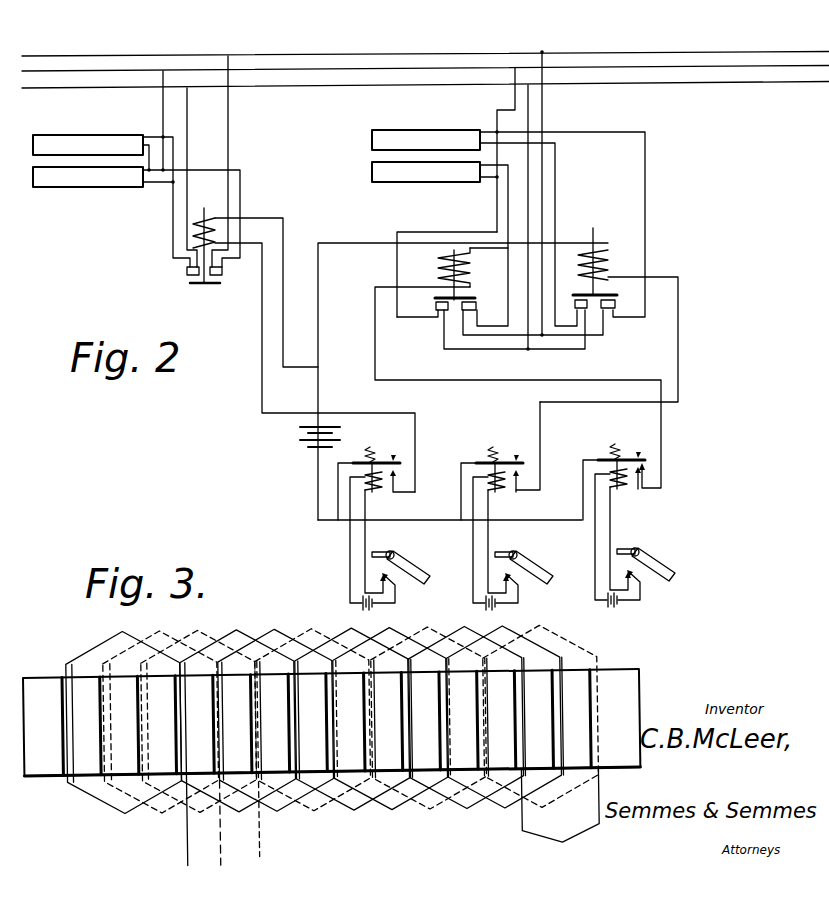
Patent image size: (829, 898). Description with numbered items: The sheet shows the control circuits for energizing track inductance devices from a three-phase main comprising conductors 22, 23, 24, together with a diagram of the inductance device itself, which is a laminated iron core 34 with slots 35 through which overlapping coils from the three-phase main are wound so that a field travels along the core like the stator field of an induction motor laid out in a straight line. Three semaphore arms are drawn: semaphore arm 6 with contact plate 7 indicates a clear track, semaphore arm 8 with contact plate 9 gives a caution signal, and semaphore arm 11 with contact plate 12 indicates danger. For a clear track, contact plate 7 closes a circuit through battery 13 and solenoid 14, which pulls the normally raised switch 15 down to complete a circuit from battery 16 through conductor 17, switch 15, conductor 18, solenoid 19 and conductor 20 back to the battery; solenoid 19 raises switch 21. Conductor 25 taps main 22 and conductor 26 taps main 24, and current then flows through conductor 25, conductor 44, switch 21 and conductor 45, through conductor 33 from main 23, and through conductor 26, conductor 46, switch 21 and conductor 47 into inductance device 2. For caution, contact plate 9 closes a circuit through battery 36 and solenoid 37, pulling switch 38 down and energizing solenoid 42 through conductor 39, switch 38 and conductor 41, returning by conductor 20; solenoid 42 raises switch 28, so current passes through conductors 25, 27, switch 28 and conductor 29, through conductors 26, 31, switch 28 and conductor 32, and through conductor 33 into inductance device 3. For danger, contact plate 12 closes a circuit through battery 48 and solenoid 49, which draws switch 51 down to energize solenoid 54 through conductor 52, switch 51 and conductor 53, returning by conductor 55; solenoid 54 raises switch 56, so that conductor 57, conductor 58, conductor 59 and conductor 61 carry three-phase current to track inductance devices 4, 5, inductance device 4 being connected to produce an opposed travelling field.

In FIG. 2, the track inductance device 2 is at (380, 173).
In FIG. 2, the track inductance device 3 is at (376, 135).
In FIG. 2, the track inductance device 4 is at (46, 134).
In FIG. 2, the track inductance device 5 is at (44, 187).
In FIG. 2, the semaphore arm 6 is at (668, 563).
In FIG. 2, the contact plate 7 is at (628, 536).
In FIG. 2, the semaphore arm 8 is at (537, 559).
In FIG. 2, the contact plate 9 is at (507, 541).
In FIG. 2, the semaphore arm 11 is at (428, 572).
In FIG. 2, the contact plate 12 is at (386, 551).
In FIG. 2, the battery 13 is at (587, 606).
In FIG. 2, the solenoid 14 is at (633, 487).
In FIG. 2, the switch 15 is at (621, 439).
In FIG. 2, the battery 16 is at (298, 445).
In FIG. 2, the conductor 17 is at (574, 490).
In FIG. 2, the conductor 18 is at (671, 467).
In FIG. 2, the solenoid 19 is at (438, 262).
In FIG. 2, the conductor 20 is at (342, 243).
In FIG. 2, the switch 21 is at (474, 296).
In FIG. 2, the conductor of three-phase main 22 is at (370, 54).
In FIG. 2, the conductor of three-phase main 23 is at (412, 68).
In FIG. 2, the conductor of three-phase main 24 is at (447, 83).
In FIG. 2, the conductor 25 is at (545, 97).
In FIG. 2, the conductor 26 is at (545, 115).
In FIG. 2, the conductor 27 is at (603, 337).
In FIG. 2, the switch 28 is at (608, 296).
In FIG. 2, the conductor 29 is at (646, 192).
In FIG. 2, the conductor 31 is at (553, 349).
In FIG. 2, the conductor 32 is at (556, 188).
In FIG. 2, the conductor 33 is at (515, 95).
In FIG. 3, the laminated iron core 34 is at (88, 768).
In FIG. 3, the slots 35 is at (63, 763).
In FIG. 2, the battery 36 is at (460, 605).
In FIG. 2, the solenoid 37 is at (512, 489).
In FIG. 2, the switch 38 is at (499, 441).
In FIG. 2, the conductor 39 is at (449, 481).
In FIG. 2, the conductor 41 is at (575, 402).
In FIG. 2, the solenoid 42 is at (610, 252).
In FIG. 2, the conductor 44 is at (497, 335).
In FIG. 2, the conductor 45 is at (508, 205).
In FIG. 2, the conductor 46 is at (460, 350).
In FIG. 2, the conductor 47 is at (410, 232).
In FIG. 2, the battery 48 is at (349, 603).
In FIG. 2, the solenoid 49 is at (383, 492).
In FIG. 2, the switch 51 is at (381, 461).
In FIG. 2, the conductor 52 is at (318, 510).
In FIG. 2, the conductor 53 is at (262, 395).
In FIG. 2, the solenoid 54 is at (201, 214).
In FIG. 2, the conductor 55 is at (294, 204).
In FIG. 2, the switch 56 is at (190, 285).
In FIG. 2, the conductor 57 is at (229, 126).
In FIG. 2, the conductor 58 is at (242, 170).
In FIG. 2, the conductor 59 is at (163, 108).
In FIG. 2, the conductor 61 is at (204, 177).